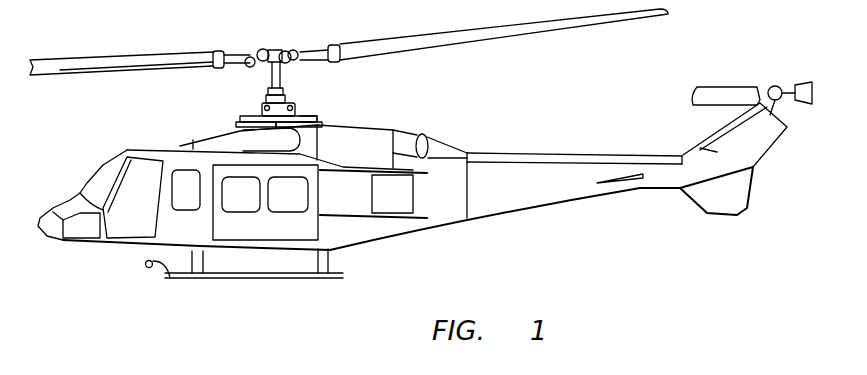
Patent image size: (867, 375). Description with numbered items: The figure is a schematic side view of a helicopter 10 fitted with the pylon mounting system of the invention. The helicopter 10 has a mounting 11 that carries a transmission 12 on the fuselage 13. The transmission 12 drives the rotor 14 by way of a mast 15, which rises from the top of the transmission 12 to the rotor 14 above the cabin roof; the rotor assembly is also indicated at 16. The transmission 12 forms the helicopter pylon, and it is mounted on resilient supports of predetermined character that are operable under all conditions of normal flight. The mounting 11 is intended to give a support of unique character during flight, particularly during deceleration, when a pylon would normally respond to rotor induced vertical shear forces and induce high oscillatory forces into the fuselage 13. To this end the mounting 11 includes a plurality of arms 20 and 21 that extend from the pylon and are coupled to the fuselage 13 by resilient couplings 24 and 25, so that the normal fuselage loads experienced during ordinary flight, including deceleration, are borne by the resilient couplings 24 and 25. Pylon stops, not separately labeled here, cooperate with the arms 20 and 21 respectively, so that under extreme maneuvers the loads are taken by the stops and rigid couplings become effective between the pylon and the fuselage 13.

The helicopter 10 is at (92, 131).
The mounting 11 is at (278, 110).
The transmission 12 is at (271, 96).
The fuselage 13 is at (387, 227).
The rotor 14 is at (181, 56).
The mast 15 is at (284, 62).
The main rotor 16 is at (283, 58).
The arm 20 is at (247, 116).
The arm 21 is at (318, 116).
The resilient coupling 24 is at (240, 119).
The resilient coupling 25 is at (323, 122).